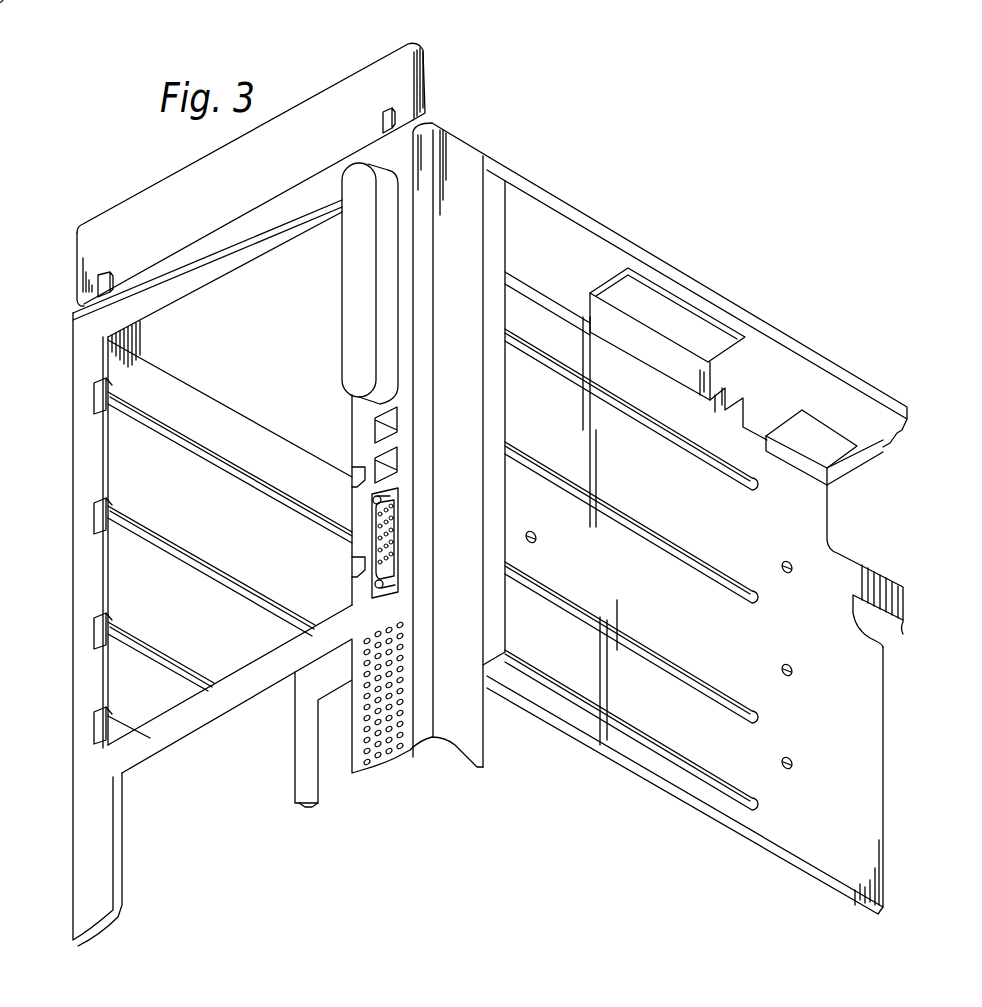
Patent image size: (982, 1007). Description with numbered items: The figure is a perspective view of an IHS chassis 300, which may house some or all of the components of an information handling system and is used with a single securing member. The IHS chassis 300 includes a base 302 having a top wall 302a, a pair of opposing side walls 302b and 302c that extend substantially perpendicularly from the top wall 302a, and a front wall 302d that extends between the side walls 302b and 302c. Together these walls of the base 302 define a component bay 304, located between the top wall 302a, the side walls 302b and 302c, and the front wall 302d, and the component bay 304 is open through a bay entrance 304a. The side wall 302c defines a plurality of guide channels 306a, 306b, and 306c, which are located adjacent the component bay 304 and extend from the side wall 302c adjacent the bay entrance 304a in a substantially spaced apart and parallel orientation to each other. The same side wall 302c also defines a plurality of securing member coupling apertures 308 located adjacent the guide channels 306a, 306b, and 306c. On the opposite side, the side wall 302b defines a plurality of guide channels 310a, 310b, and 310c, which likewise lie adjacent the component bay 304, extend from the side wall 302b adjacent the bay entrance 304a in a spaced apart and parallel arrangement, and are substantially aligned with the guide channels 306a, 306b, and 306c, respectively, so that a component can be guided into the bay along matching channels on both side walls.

The IHS chassis 300 is at (550, 80).
The base 302 is at (458, 145).
The top wall 302a is at (577, 181).
The side wall 302b is at (175, 585).
The side wall 302c is at (835, 557).
The front wall 302d is at (197, 712).
The component bay 304 is at (120, 577).
The bay entrance 304a is at (245, 667).
The guide channel 306a is at (652, 391).
The guide channel 306b is at (675, 515).
The guide channel 306c is at (675, 633).
The securing member coupling apertures 308 is at (537, 535).
The guide channel 310a is at (210, 450).
The guide channel 310b is at (150, 538).
The guide channel 310c is at (148, 655).